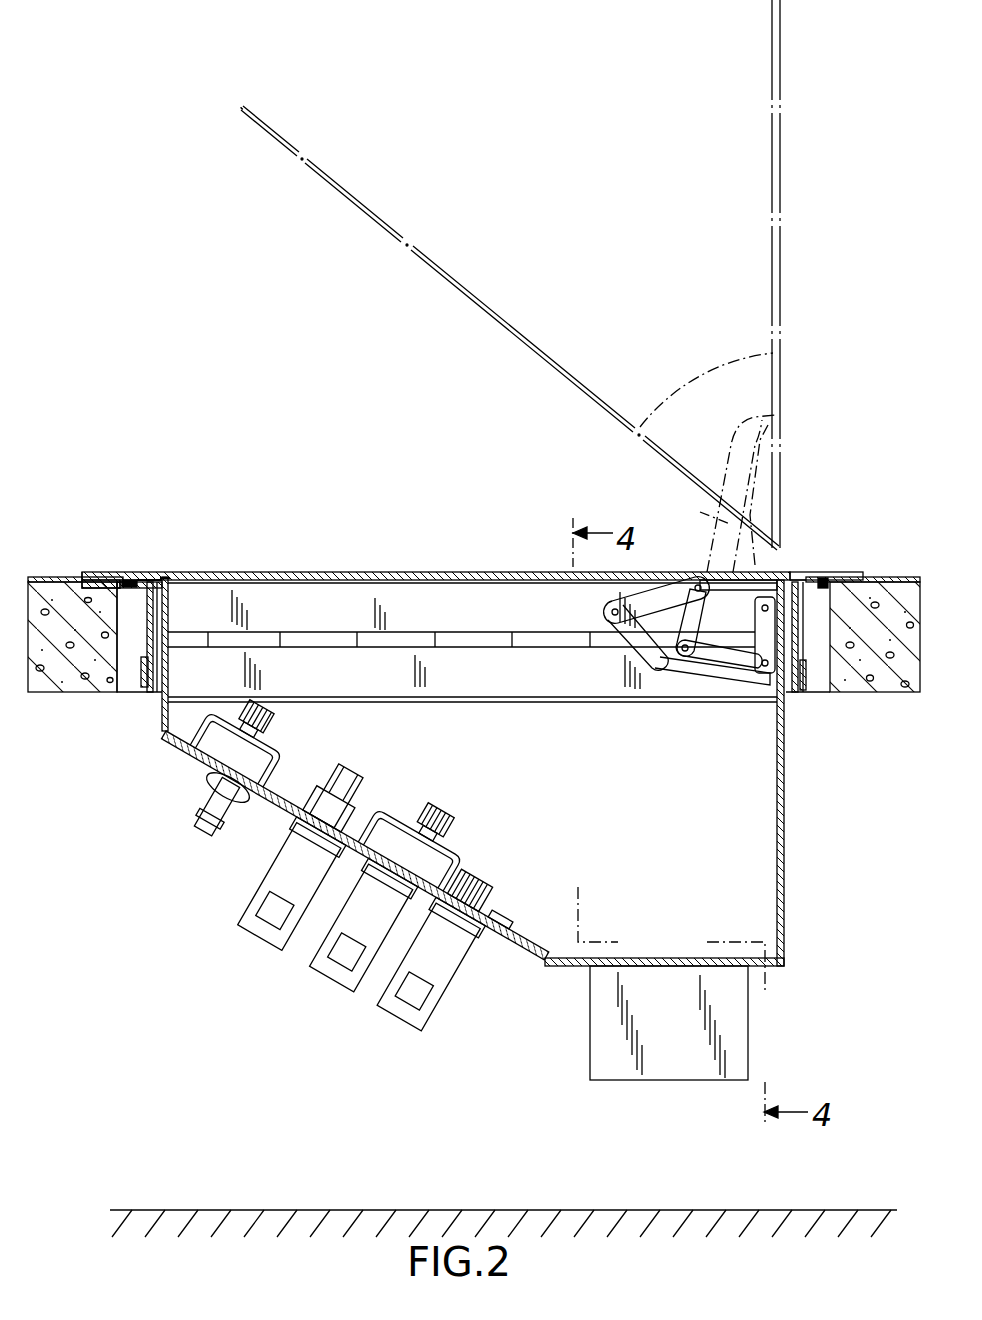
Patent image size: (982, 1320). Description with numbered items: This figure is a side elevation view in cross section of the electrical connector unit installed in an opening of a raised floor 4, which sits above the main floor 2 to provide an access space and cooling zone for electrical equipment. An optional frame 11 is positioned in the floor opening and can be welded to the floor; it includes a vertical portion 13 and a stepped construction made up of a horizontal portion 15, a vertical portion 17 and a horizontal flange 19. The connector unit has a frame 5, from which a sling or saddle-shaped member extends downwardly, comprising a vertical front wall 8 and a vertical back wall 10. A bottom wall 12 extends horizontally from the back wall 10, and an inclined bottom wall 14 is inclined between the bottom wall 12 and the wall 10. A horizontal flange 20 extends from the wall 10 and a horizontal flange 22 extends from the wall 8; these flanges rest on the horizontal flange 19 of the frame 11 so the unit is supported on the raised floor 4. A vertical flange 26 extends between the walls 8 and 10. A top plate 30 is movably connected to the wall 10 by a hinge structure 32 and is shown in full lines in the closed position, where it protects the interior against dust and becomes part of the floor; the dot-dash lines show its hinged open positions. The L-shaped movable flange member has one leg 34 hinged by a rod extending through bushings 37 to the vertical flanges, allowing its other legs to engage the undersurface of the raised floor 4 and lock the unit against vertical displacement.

The main floor 2 is at (294, 1212).
The raised floor 4 is at (868, 682).
The frame 5 is at (796, 870).
The front wall 8 is at (784, 777).
The back wall 10 is at (162, 720).
The frame 11 is at (138, 655).
The bottom wall 12 is at (668, 957).
The vertical portion 13 is at (150, 632).
The inclined bottom wall 14 is at (530, 958).
The horizontal portion 15 is at (150, 580).
The vertical portion 17 is at (133, 578).
The horizontal flange 19 is at (110, 573).
The horizontal flange 20 is at (165, 580).
The horizontal flange 22 is at (782, 578).
The vertical flange 26 is at (472, 597).
The top plate 30 is at (377, 573).
The hinge structure 32 is at (670, 590).
The leg 34 is at (535, 685).
The bushings 37 is at (485, 642).